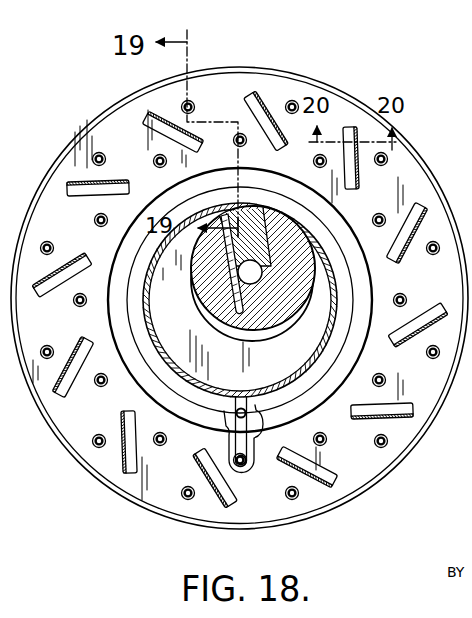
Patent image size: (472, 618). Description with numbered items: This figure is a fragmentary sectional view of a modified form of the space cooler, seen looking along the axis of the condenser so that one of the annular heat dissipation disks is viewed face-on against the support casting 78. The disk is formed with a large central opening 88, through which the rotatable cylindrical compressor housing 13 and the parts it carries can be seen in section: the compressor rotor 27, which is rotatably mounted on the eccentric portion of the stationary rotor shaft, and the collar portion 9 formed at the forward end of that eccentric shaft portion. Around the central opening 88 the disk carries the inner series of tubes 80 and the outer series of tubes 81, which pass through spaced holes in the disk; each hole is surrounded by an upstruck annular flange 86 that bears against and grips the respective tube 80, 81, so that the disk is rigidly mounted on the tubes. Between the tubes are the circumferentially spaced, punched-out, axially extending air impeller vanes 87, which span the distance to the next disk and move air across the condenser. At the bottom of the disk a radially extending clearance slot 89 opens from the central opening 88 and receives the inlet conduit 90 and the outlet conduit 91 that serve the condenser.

The support casting 78 is at (97, 118).
The outer series of tubes 81 is at (106, 153).
The inner series of tubes 80 is at (96, 223).
The central opening 88 is at (109, 312).
The upstruck annular flanges 86 is at (106, 392).
The air impeller vanes 87 is at (400, 254).
The compressor housing 13 is at (338, 288).
The collar portion 9 is at (205, 323).
The compressor rotor 27 is at (292, 308).
The inlet conduit 90 is at (236, 413).
The clearance slot 89 is at (266, 415).
The outlet conduit 91 is at (250, 468).